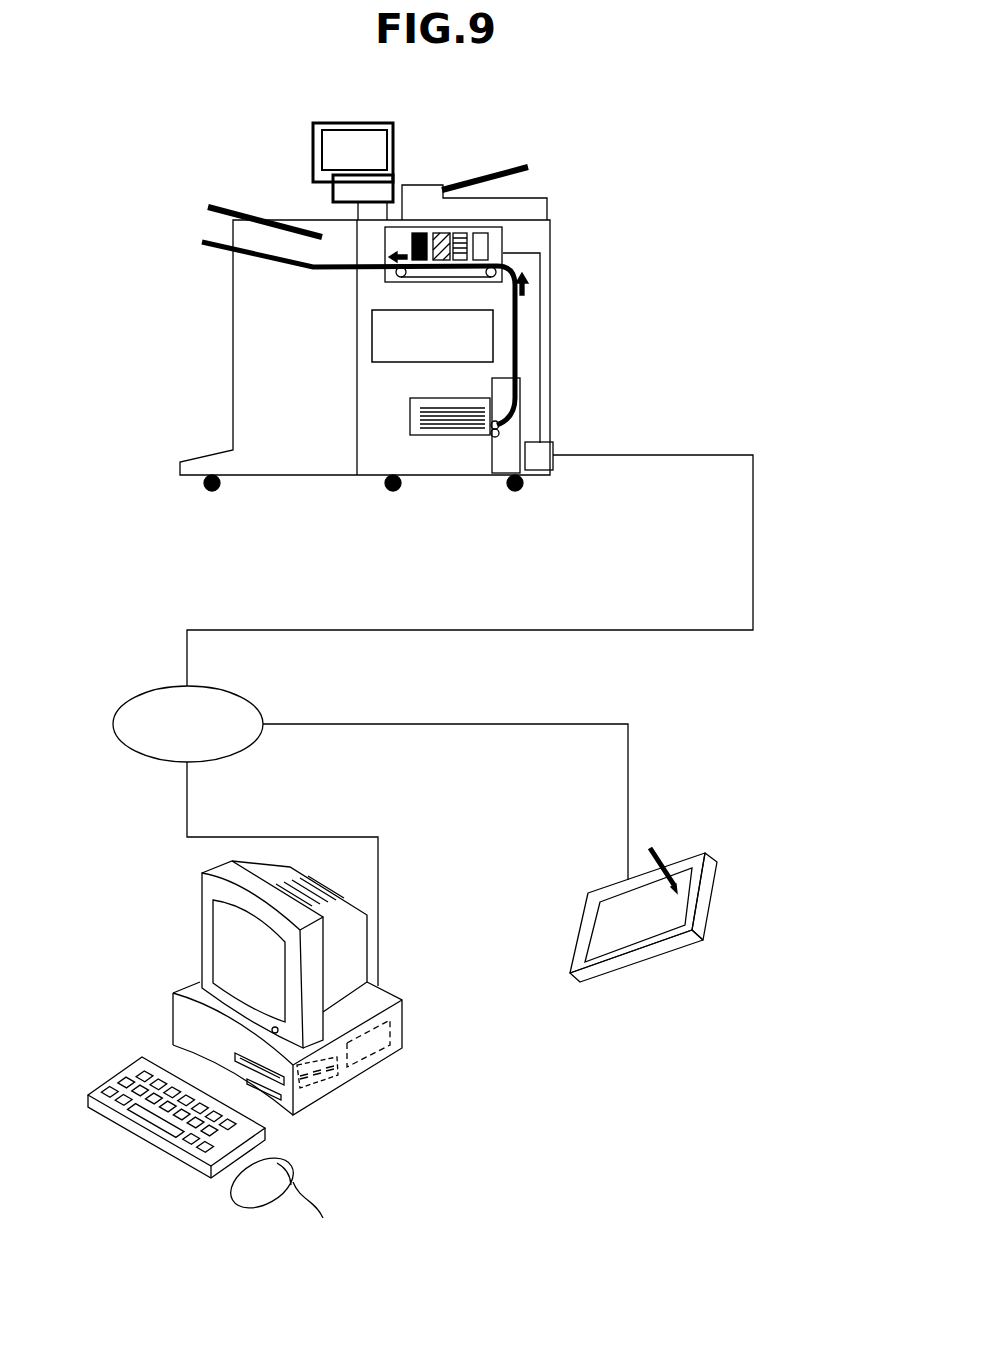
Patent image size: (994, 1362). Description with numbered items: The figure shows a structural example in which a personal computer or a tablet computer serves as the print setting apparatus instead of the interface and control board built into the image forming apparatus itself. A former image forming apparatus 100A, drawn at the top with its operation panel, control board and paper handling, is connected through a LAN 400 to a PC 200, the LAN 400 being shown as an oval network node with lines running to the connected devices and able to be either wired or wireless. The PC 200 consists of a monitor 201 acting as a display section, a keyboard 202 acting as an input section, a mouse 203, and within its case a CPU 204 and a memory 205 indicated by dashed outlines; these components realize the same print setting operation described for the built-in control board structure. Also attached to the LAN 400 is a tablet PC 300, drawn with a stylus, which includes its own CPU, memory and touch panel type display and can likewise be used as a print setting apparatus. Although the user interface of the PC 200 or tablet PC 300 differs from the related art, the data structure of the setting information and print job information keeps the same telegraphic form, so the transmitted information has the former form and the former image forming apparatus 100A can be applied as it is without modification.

The former image forming apparatus 100A is at (575, 193).
The PC 200 is at (122, 887).
The monitor 201 is at (202, 907).
The keyboard 202 is at (123, 1068).
The mouse 203 is at (293, 1187).
The CPU 204 is at (378, 1050).
The memory 205 is at (333, 1085).
The tablet PC 300 is at (717, 858).
The LAN 400 is at (250, 698).